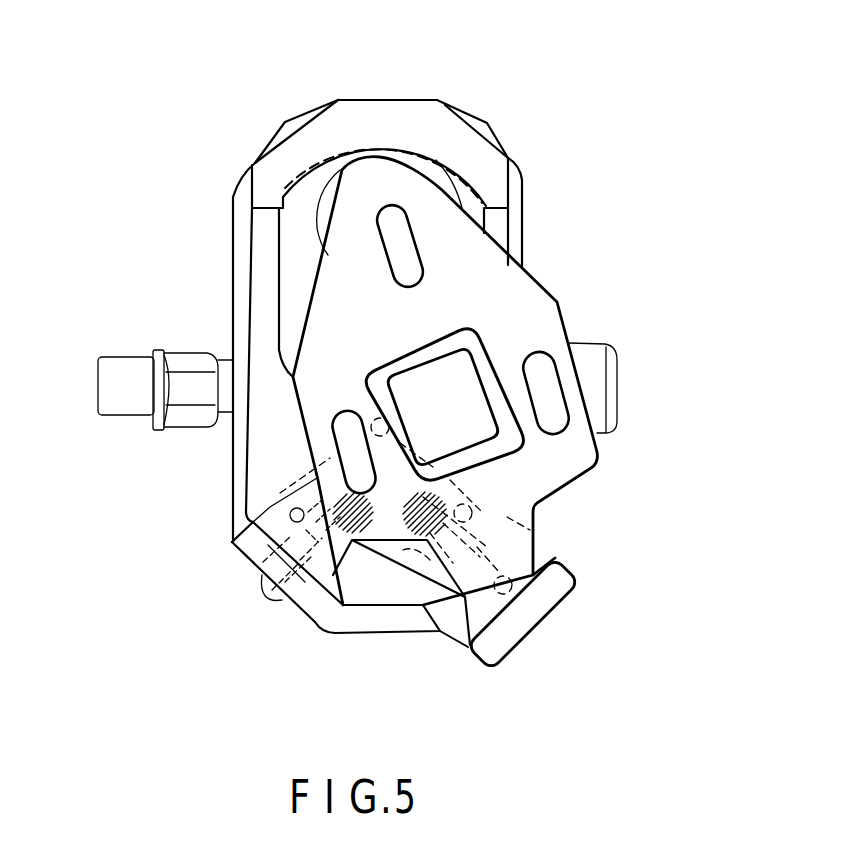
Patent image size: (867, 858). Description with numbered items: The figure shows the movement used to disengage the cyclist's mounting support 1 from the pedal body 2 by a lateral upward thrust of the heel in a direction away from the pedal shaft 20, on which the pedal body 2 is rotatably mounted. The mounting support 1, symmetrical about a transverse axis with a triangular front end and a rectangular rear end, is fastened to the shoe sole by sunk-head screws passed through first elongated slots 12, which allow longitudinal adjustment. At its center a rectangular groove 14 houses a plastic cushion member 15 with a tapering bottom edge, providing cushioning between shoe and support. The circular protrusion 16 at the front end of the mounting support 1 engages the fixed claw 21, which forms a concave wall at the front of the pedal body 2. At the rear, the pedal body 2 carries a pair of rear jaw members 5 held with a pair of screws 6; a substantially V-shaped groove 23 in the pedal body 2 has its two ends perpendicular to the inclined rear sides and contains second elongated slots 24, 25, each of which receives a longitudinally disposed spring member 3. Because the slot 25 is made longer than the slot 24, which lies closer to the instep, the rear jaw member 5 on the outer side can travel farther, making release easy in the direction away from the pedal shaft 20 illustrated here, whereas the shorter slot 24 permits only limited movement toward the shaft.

The mounting support 1 is at (605, 322).
The pedal body 2 is at (240, 160).
The spring member 3 is at (292, 618).
The rear jaw member 5 is at (237, 552).
The screw 6 is at (480, 563).
The first elongated slot 12 is at (397, 237).
The rectangular groove 14 is at (507, 445).
The cushion member 15 is at (453, 378).
The circular protrusion 16 is at (343, 182).
The pedal shaft 20 is at (143, 350).
The fixed claw 21 is at (413, 144).
The V-shaped groove 23 is at (303, 496).
The second elongated slot 24 is at (262, 566).
The second elongated slot 25 is at (386, 570).